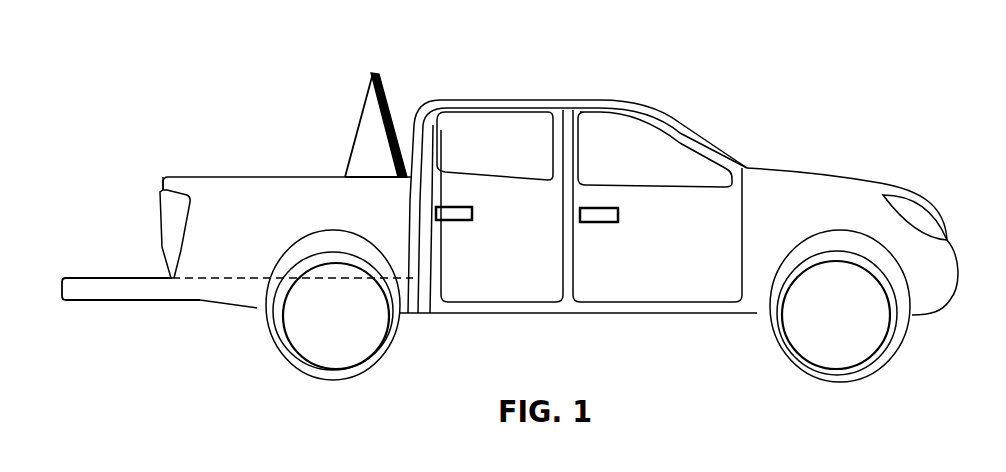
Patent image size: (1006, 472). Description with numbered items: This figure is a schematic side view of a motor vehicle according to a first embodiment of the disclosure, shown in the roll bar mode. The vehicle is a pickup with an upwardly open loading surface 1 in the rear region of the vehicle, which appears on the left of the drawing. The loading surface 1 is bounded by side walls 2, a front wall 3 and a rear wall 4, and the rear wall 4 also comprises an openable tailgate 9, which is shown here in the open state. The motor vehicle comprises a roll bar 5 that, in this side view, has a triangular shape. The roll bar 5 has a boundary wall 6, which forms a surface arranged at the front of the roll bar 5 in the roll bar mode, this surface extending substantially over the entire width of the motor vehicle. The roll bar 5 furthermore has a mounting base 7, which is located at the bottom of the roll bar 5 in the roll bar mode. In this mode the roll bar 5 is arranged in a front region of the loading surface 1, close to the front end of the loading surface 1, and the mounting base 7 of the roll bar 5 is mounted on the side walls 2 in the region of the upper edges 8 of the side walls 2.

The loading surface 1 is at (223, 277).
The side walls 2 is at (252, 197).
The front wall 3 is at (423, 265).
The rear wall 4 is at (163, 190).
The roll bar 5 is at (372, 130).
The boundary wall 6 is at (385, 100).
The mounting base 7 is at (370, 180).
The upper edges 8 is at (293, 176).
The tailgate 9 is at (112, 290).